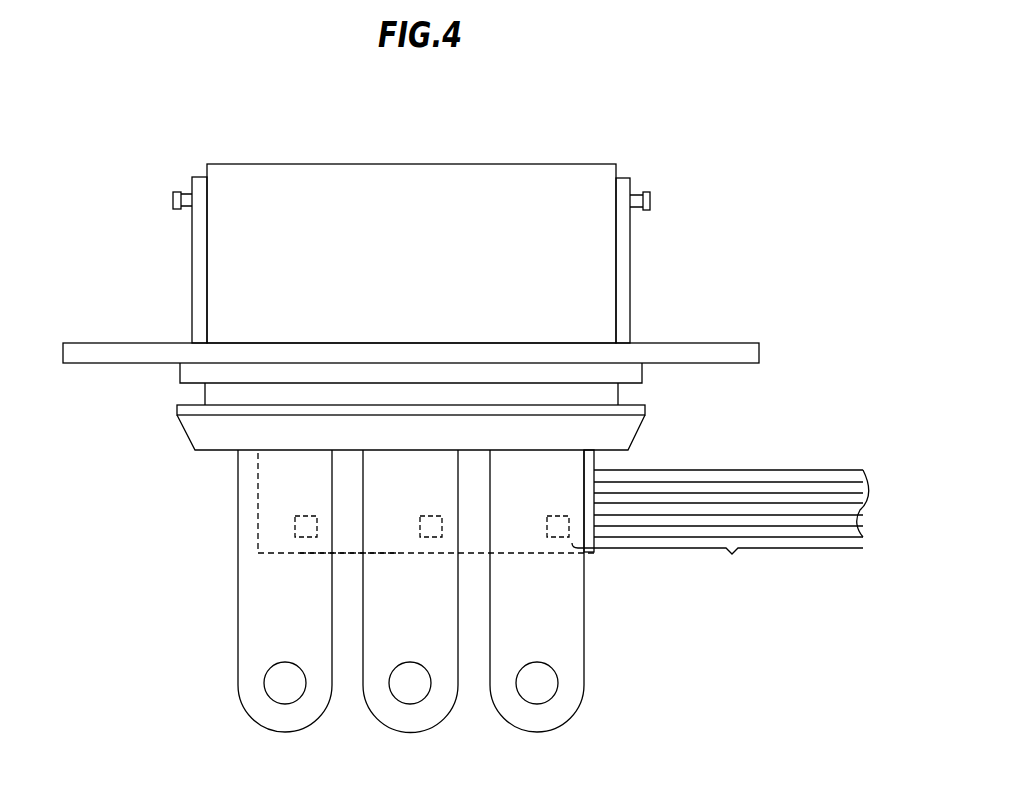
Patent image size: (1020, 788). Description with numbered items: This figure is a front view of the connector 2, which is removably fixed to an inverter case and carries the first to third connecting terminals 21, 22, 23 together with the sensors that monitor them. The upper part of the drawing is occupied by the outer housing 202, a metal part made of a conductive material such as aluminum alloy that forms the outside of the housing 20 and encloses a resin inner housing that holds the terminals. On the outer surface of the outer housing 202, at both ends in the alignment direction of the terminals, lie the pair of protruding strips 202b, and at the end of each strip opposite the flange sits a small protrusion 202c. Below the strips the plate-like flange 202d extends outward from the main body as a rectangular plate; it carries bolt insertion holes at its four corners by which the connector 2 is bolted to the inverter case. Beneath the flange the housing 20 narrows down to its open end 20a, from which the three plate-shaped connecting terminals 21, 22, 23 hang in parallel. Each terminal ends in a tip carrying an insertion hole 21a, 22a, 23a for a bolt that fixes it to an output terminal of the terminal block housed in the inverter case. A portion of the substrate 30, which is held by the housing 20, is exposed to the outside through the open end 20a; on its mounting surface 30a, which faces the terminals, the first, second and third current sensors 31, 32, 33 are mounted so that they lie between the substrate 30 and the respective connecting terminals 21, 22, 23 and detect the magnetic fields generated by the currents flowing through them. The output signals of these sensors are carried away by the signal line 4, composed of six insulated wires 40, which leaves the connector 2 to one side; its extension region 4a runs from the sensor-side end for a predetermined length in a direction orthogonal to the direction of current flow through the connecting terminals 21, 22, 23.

The connector 2 is at (616, 124).
The housing 20 is at (182, 135).
The open end 20a is at (215, 450).
The first connecting terminal 21 is at (245, 712).
The insertion hole 21a is at (290, 700).
The second connecting terminal 22 is at (373, 713).
The insertion hole 22a is at (415, 700).
The third connecting terminal 23 is at (502, 713).
The insertion hole 23a is at (541, 700).
The substrate 30 is at (258, 527).
The mounting surface 30a is at (346, 527).
The first current sensor 31 is at (307, 515).
The second current sensor 32 is at (432, 515).
The third current sensor 33 is at (558, 515).
The signal line 4 is at (816, 434).
The extension region 4a is at (717, 564).
The insulated wires 40 is at (710, 488).
The outer housing 202 is at (367, 163).
The protruding strips 202b is at (192, 268).
The protrusions 202c is at (173, 193).
The flange 202d is at (719, 343).